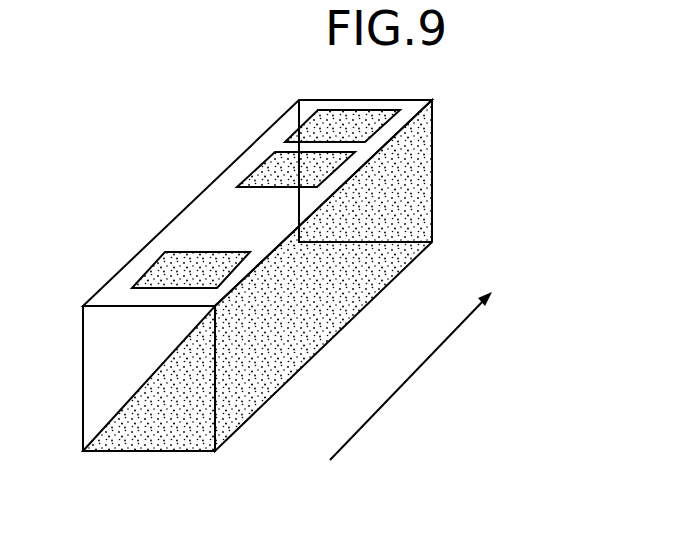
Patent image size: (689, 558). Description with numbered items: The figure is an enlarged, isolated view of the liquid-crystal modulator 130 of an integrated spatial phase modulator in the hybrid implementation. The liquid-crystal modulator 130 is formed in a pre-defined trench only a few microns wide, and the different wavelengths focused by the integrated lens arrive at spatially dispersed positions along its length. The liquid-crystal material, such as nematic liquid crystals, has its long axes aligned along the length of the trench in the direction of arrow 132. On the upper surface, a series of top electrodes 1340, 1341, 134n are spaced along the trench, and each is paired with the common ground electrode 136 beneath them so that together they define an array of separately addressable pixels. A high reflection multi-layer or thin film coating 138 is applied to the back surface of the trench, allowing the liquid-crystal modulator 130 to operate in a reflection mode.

The liquid-crystal modulator 130 is at (168, 100).
The arrow 132 is at (417, 373).
The top electrode 1340 is at (297, 135).
The top electrode 1341 is at (255, 170).
The top electrode 134n is at (148, 270).
The common ground electrode 136 is at (140, 451).
The high reflection multi-layer or thin film coating 138 is at (432, 191).